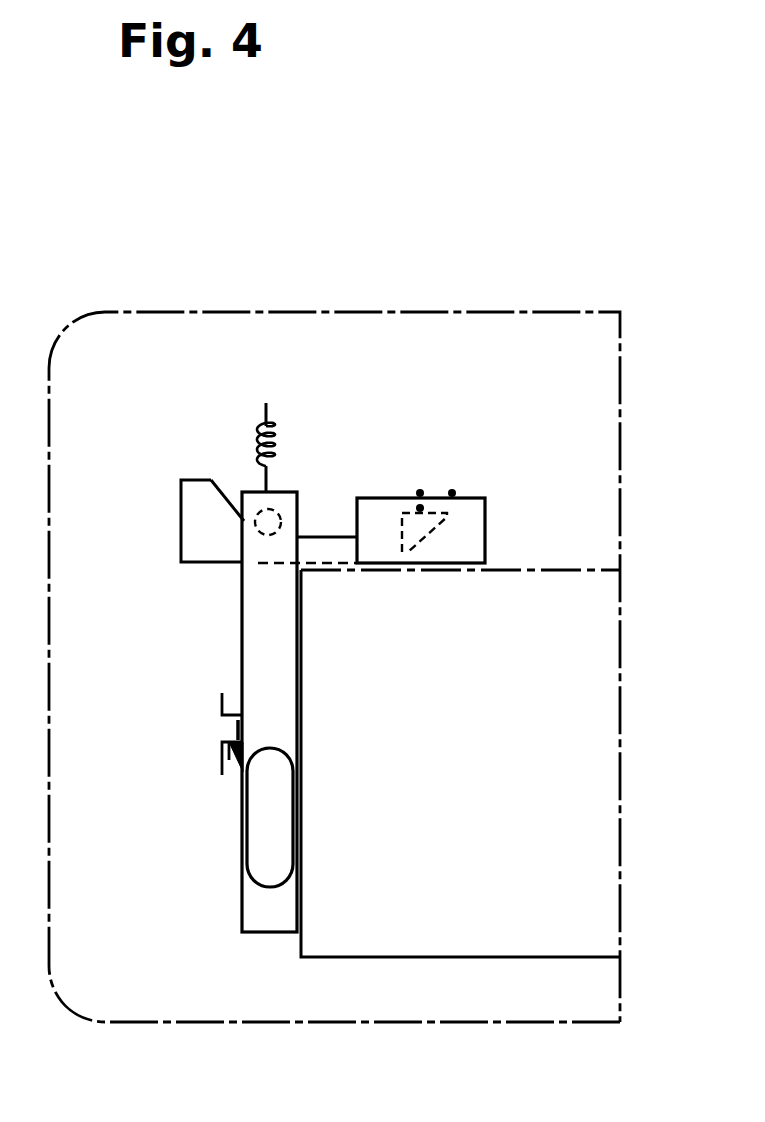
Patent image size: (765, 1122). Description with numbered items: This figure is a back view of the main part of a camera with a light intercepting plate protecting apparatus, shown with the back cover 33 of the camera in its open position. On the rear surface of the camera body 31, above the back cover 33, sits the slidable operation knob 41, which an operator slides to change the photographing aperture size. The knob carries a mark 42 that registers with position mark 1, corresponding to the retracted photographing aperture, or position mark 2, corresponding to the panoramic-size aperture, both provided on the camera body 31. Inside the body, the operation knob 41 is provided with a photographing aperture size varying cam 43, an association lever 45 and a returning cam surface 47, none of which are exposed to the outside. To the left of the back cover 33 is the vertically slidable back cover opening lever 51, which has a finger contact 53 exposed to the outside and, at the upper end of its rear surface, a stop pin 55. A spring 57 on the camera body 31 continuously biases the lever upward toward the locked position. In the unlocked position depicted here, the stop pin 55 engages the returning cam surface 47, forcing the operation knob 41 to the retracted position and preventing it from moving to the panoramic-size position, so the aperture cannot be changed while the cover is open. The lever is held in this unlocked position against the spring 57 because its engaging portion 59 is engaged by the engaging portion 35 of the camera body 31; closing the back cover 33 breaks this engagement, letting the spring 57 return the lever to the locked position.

The camera body 31 is at (505, 330).
The back cover 33 is at (580, 733).
The engaging portion 35 is at (222, 768).
The operation knob 41 is at (477, 498).
The mark 42 is at (418, 505).
The photographing aperture size varying cam 43 is at (447, 518).
The association lever 45 is at (187, 533).
The returning cam surface 47 is at (216, 478).
The back cover opening lever 51 is at (247, 607).
The finger contact 53 is at (254, 828).
The stop pin 55 is at (283, 514).
The spring 57 is at (278, 432).
The engaging portion 59 is at (243, 740).
The position mark 1 is at (419, 477).
The position mark 2 is at (451, 477).